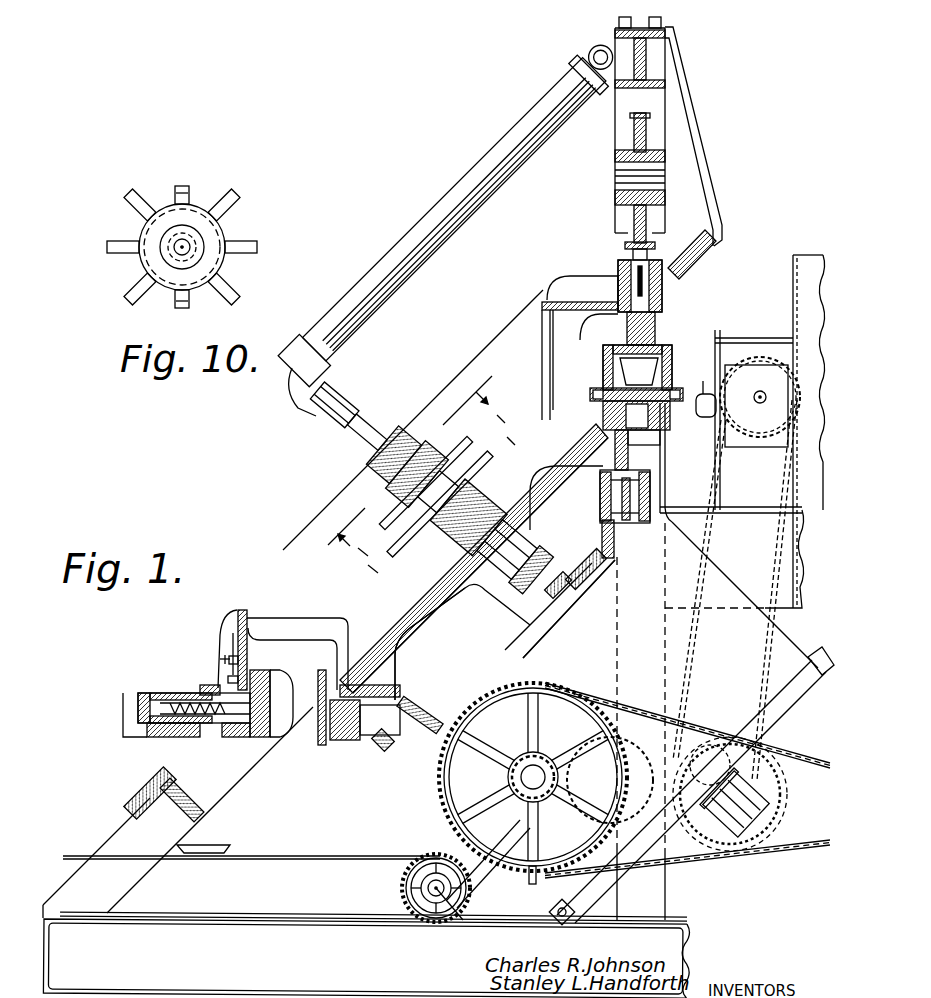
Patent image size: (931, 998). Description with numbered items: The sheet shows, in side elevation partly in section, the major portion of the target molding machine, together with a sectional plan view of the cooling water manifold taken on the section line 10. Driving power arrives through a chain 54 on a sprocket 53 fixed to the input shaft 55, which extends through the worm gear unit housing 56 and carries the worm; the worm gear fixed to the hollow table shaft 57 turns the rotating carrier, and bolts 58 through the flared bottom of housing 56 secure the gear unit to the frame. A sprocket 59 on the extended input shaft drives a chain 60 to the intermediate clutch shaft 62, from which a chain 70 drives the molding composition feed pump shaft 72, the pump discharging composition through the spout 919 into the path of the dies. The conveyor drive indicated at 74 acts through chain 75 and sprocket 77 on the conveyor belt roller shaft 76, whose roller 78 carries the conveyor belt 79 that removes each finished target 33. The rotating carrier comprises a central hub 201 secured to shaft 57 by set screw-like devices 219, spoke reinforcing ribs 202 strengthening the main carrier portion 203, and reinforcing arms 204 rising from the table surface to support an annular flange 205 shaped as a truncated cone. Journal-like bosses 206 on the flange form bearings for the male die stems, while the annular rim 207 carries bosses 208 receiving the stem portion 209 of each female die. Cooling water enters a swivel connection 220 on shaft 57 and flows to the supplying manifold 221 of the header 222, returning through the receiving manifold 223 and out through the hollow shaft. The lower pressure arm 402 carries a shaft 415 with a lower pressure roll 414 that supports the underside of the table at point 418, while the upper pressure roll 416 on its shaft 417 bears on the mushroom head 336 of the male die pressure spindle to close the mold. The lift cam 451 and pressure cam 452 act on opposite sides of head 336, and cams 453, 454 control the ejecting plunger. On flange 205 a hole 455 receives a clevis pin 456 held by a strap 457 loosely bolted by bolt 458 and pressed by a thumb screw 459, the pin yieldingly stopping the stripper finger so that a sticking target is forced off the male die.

In FIG. 1, the section line 10 is at (402, 464).
In FIG. 1, the target 33 is at (655, 378).
In FIG. 1, the sprocket 53 is at (542, 881).
In FIG. 1, the chain 54 is at (666, 860).
In FIG. 1, the input shaft 55 is at (546, 777).
In FIG. 1, the worm gear unit housing 56 is at (785, 652).
In FIG. 1, the hollow table shaft 57 is at (762, 802).
In FIG. 1, the bolts 58 is at (553, 910).
In FIG. 1, the sprocket 59 is at (516, 793).
In FIG. 1, the chain 60 is at (645, 722).
In FIG. 1, the intermediate clutch shaft 62 is at (718, 770).
In FIG. 1, the chain 70 is at (690, 660).
In FIG. 1, the feed pump shaft 72 is at (760, 404).
In FIG. 1, the spoke 74 is at (515, 808).
In FIG. 1, the chain 75 is at (486, 884).
In FIG. 1, the conveyor belt roller shaft 76 is at (366, 955).
In FIG. 1, the sprocket 77 is at (446, 893).
In FIG. 1, the roller 78 is at (402, 890).
In FIG. 1, the conveyor belt 79 is at (340, 857).
In FIG. 1, the central hub 201 is at (488, 512).
In FIG. 1, the spoke reinforcing ribs 202 is at (530, 512).
In FIG. 1, the main carrier portion 203 is at (583, 437).
In FIG. 1, the reinforcing arms 204 is at (543, 326).
In FIG. 1, the annular flange 205 is at (547, 297).
In FIG. 1, the journal-like bosses 206 is at (618, 262).
In FIG. 1, the annular rim 207 is at (616, 445).
In FIG. 1, the bosses 208 is at (665, 420).
In FIG. 1, the stem portion of the female die 209 is at (662, 438).
In FIG. 1, the set screw-like devices 219 is at (545, 495).
In FIG. 1, the swivel connection 220 is at (348, 395).
In FIG. 1, the supplying manifold 221 is at (412, 460).
In FIG. 10, the header 222 is at (212, 233).
In FIG. 1, the header 222 is at (430, 450).
In FIG. 1, the receiving manifold 223 is at (398, 498).
In FIG. 1, the mushroom head 336 is at (143, 693).
In FIG. 1, the lower pressure arm 402 is at (602, 545).
In FIG. 1, the lower pressure roll 414 is at (645, 486).
In FIG. 1, the shaft 415 is at (650, 497).
In FIG. 1, the upper pressure roll 416 is at (633, 137).
In FIG. 1, the pressure wheel shaft 417 is at (622, 175).
In FIG. 1, the support point 418 is at (635, 470).
In FIG. 1, the lift cam 451 is at (152, 745).
In FIG. 1, the pressure cam 452 is at (126, 706).
In FIG. 1, the cam 453 is at (405, 705).
In FIG. 1, the cam 454 is at (384, 746).
In FIG. 1, the drilled hole 455 is at (245, 680).
In FIG. 1, the clevis pin 456 is at (230, 678).
In FIG. 1, the strap 457 is at (231, 657).
In FIG. 1, the bolt 458 is at (233, 648).
In FIG. 1, the thumb screw 459 is at (224, 658).
In FIG. 1, the spout 919 is at (700, 388).